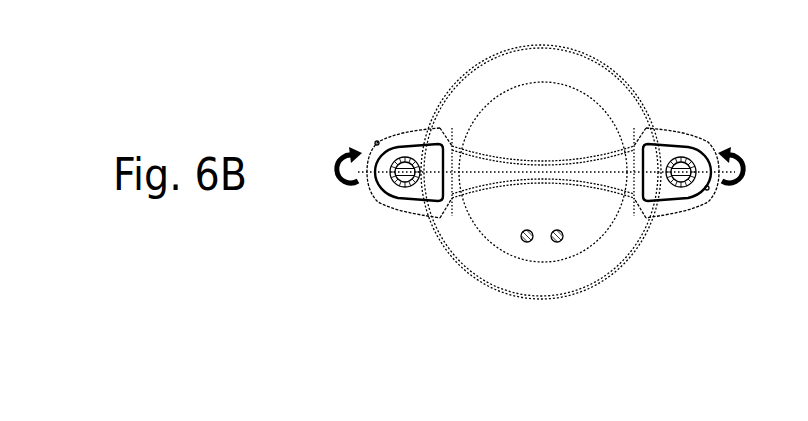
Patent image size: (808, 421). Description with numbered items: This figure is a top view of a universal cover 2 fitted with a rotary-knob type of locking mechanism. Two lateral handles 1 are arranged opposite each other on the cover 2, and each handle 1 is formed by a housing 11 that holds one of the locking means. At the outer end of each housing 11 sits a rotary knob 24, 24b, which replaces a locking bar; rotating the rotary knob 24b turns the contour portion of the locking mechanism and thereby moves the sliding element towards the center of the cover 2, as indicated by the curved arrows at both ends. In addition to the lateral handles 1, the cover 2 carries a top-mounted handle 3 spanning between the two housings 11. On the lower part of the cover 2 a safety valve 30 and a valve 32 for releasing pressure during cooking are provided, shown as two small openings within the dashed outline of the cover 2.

The lateral handle 1 is at (695, 193).
The housing 11 is at (695, 193).
The cover 2 is at (423, 290).
The top-mounted handle 3 is at (567, 167).
The grip 24 is at (677, 177).
The rotary knob 24b is at (677, 177).
The safety valve 30 is at (560, 240).
The valve 32 is at (531, 241).